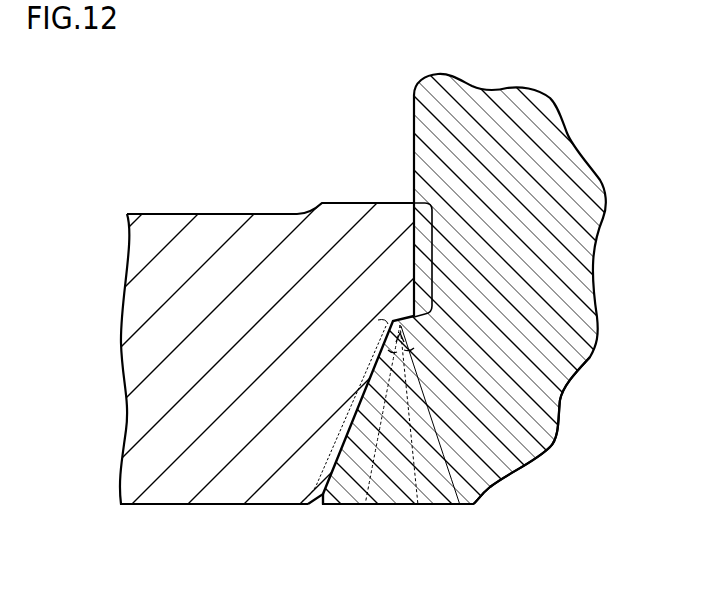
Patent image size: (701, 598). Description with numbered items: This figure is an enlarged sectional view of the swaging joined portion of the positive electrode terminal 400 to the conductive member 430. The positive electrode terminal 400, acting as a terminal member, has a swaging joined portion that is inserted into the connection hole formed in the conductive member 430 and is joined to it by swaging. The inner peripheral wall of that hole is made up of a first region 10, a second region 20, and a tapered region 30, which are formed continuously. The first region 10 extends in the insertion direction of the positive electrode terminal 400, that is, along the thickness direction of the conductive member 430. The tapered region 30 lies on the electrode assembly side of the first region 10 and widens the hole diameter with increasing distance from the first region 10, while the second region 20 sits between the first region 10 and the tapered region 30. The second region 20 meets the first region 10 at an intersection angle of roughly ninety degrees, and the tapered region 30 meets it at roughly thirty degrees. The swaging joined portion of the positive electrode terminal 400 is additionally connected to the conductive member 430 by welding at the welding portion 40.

The first region 10 is at (435, 258).
The second region 20 is at (418, 505).
The tapered region 30 is at (347, 400).
The welding portion 40 is at (316, 515).
The positive electrode terminal 400 is at (488, 113).
The conductive member 430 is at (191, 236).